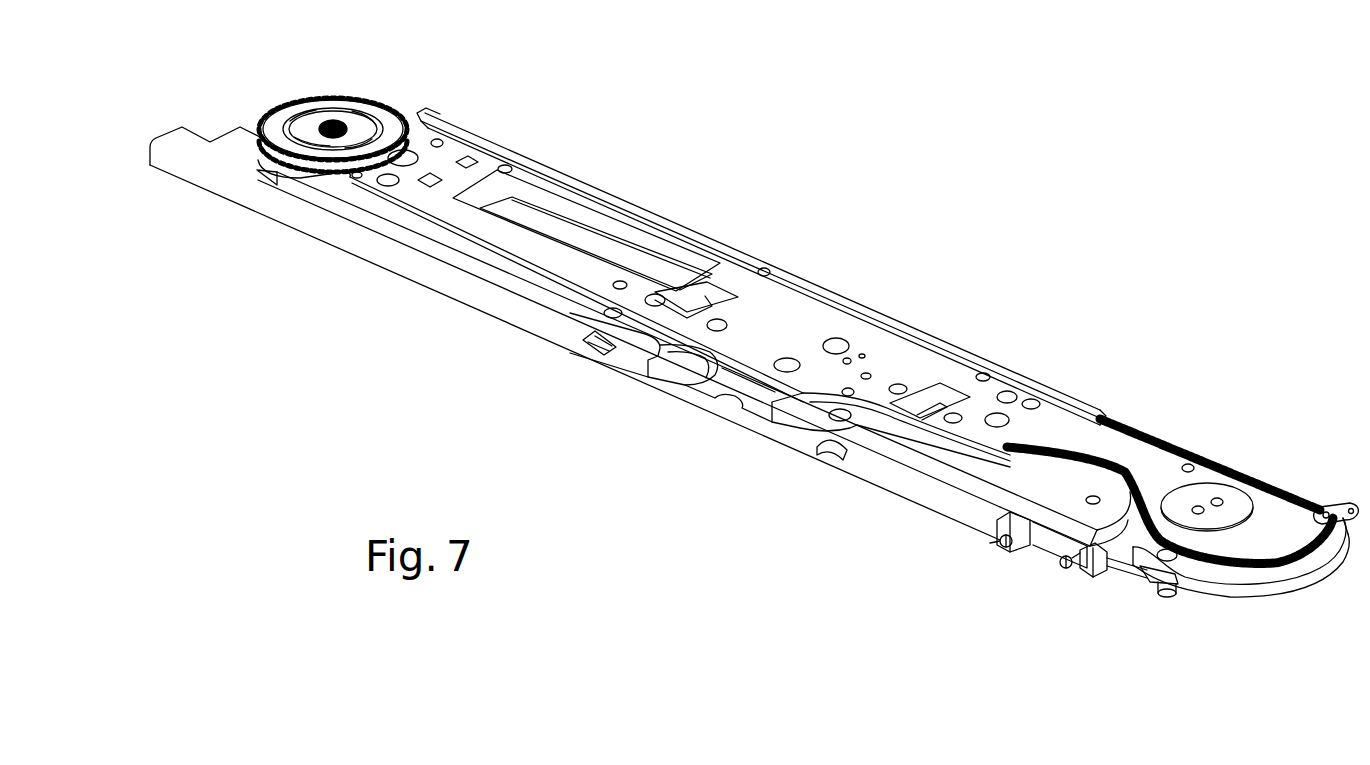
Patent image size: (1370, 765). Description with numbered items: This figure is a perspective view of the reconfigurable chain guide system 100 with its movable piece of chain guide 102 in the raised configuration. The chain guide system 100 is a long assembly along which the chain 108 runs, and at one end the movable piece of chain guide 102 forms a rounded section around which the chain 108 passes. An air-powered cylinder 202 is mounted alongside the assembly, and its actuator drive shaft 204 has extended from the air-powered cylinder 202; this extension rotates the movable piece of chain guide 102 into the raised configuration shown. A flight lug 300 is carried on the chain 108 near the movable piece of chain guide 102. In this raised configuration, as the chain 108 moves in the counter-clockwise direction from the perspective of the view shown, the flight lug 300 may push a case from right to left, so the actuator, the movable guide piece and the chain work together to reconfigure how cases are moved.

The reconfigurable chain guide system 100 is at (672, 322).
The movable piece of chain guide 102 is at (1270, 590).
The chain 108 is at (1230, 472).
The air-powered cylinder 202 is at (1052, 553).
The actuator drive shaft 204 is at (1120, 573).
The flight lug 300 is at (1345, 503).